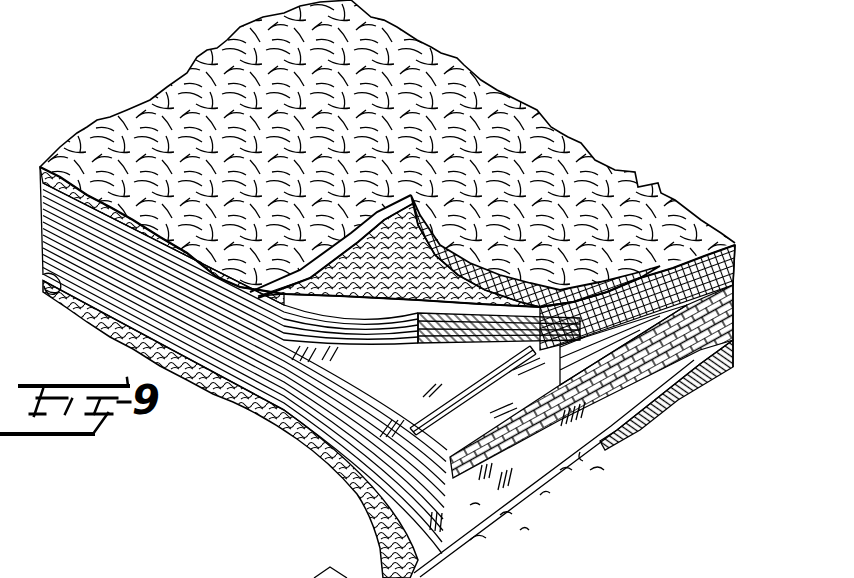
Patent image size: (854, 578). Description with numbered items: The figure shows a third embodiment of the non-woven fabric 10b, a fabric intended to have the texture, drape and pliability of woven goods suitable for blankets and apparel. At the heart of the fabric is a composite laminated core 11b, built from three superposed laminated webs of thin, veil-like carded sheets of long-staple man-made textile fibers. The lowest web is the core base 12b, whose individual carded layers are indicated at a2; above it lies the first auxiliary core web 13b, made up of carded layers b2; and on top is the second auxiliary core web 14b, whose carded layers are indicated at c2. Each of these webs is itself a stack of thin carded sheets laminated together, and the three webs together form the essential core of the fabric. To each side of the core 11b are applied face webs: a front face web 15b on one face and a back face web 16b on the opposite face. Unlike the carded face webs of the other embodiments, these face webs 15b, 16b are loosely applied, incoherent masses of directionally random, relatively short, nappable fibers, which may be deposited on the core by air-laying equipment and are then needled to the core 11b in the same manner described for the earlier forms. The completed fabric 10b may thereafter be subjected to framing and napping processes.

The non-woven fabric 10b is at (486, 45).
The front face web 15b is at (210, 45).
The core 11b is at (740, 260).
The second auxiliary core web 14b is at (351, 282).
The carded layers of second auxiliary core web c2 is at (470, 368).
The carded layers of first auxiliary core web b2 is at (414, 403).
The first auxiliary core web 13b is at (388, 388).
The carded layers of core base a2 is at (486, 492).
The core base 12b is at (540, 484).
The back face web 16b is at (285, 444).